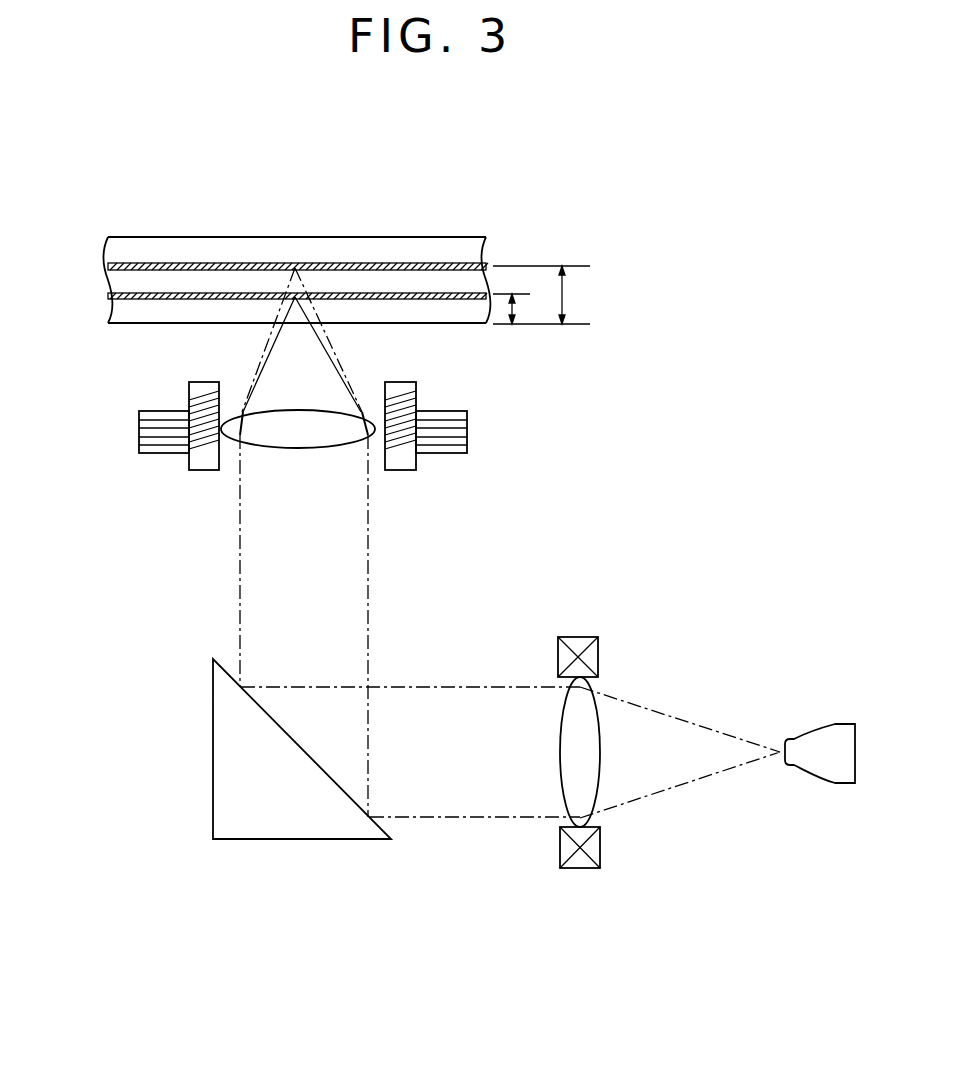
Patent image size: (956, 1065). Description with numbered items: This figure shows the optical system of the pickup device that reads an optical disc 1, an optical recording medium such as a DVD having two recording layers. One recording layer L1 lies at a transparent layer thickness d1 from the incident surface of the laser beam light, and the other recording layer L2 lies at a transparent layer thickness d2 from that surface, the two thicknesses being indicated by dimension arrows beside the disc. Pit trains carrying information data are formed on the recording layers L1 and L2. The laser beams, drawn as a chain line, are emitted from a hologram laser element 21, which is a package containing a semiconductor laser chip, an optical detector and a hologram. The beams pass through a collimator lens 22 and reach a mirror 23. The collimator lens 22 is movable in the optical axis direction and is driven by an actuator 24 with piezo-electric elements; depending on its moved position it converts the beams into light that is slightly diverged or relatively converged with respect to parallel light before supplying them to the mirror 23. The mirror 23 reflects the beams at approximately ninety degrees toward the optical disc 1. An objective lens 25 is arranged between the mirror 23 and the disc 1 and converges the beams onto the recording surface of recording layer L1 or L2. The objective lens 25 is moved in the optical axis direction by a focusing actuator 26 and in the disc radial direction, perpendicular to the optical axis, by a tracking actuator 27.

The optical disc 1 is at (260, 243).
The recording layer L1 is at (108, 295).
The recording layer L2 is at (108, 265).
The transparent layer thickness d1 is at (541, 309).
The transparent layer thickness d2 is at (541, 295).
The hologram laser element 21 is at (818, 730).
The collimator lens 22 is at (601, 757).
The mirror 23 is at (252, 841).
The actuator 24 is at (590, 637).
The objective lens 25 is at (300, 450).
The focusing actuator 26 is at (204, 382).
The tracking actuator 27 is at (155, 411).